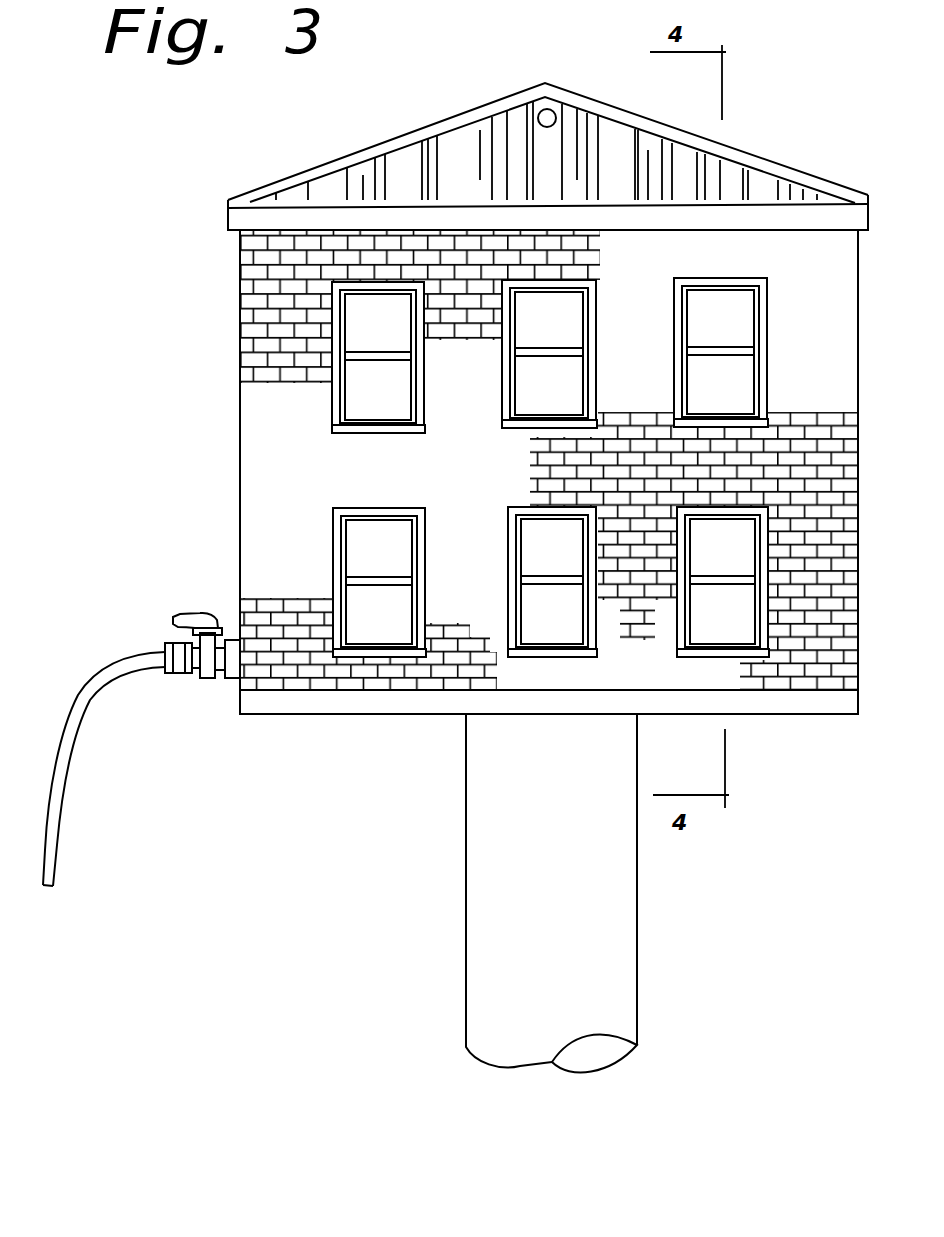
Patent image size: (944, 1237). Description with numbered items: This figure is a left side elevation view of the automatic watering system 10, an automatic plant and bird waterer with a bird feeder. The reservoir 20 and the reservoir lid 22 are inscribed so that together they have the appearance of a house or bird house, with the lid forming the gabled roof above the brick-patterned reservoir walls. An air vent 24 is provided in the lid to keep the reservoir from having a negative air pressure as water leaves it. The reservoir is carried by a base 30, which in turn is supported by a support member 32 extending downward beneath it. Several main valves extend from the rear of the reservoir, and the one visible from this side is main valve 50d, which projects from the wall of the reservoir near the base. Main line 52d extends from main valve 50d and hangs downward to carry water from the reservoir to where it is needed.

The automatic watering system 10 is at (238, 164).
The reservoir 20 is at (253, 422).
The reservoir lid 22 is at (450, 146).
The air vent 24 is at (537, 118).
The base 30 is at (405, 708).
The support member 32 is at (618, 888).
The main valve 50d is at (207, 670).
The main line 52d is at (65, 748).